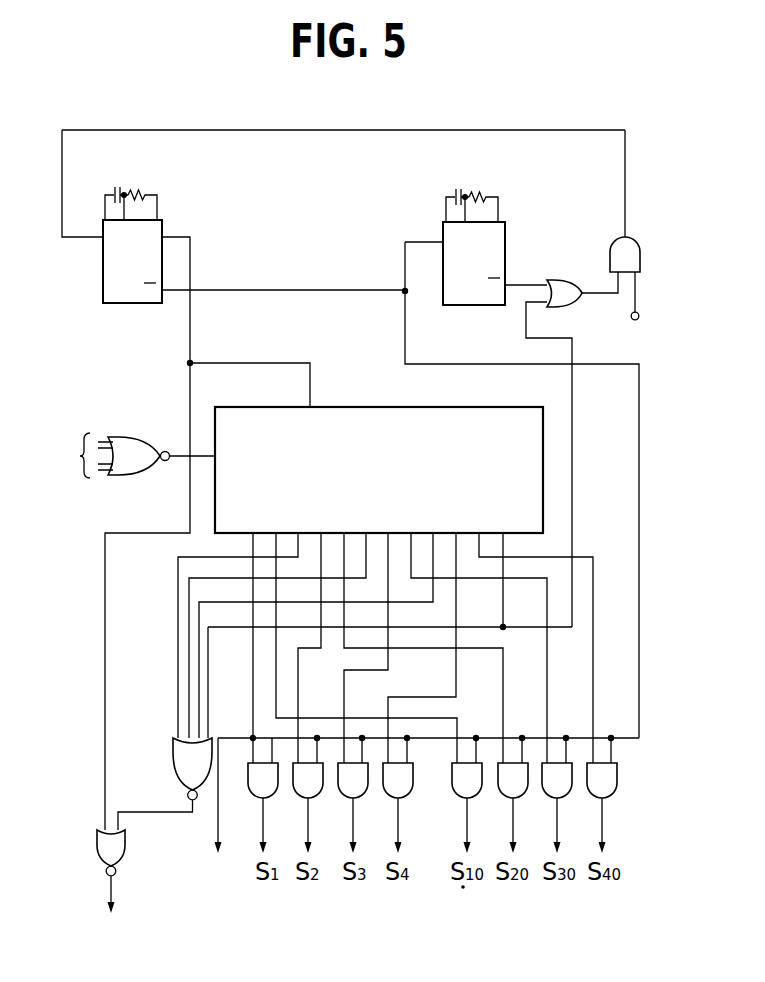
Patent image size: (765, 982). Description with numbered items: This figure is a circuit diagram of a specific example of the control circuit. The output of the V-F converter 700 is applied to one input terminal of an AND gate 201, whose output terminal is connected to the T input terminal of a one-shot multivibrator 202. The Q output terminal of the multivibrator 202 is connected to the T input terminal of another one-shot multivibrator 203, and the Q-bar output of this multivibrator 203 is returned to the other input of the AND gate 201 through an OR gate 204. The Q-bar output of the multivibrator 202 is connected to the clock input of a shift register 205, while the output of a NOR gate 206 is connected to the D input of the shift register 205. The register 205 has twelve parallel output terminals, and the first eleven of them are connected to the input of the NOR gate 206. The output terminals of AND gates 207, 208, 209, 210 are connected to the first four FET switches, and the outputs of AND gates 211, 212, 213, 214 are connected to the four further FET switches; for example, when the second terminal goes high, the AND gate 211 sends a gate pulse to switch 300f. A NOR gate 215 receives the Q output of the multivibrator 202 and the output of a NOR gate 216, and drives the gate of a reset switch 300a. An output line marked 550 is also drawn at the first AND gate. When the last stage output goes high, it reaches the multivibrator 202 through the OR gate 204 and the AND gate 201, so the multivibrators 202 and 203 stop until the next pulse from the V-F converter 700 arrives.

The AND gate 201 is at (641, 236).
The one-shot multivibrator 202 is at (163, 222).
The one-shot multivibrator 203 is at (506, 228).
The OR gate 204 is at (577, 306).
The shift register 205 is at (368, 407).
The NOR gate 206 is at (133, 436).
The AND gate 207 is at (273, 796).
The AND gate 208 is at (318, 796).
The AND gate 209 is at (363, 796).
The AND gate 210 is at (408, 796).
The AND gate 211 is at (477, 796).
The AND gate 212 is at (523, 796).
The AND gate 213 is at (567, 796).
The AND gate 214 is at (612, 796).
The NOR gate 215 is at (97, 850).
The NOR gate 216 is at (173, 770).
The V-F converter 700 is at (660, 308).
The reset switch 300a is at (112, 911).
The FET switch 300f is at (463, 902).
The output signal line 550 is at (222, 812).